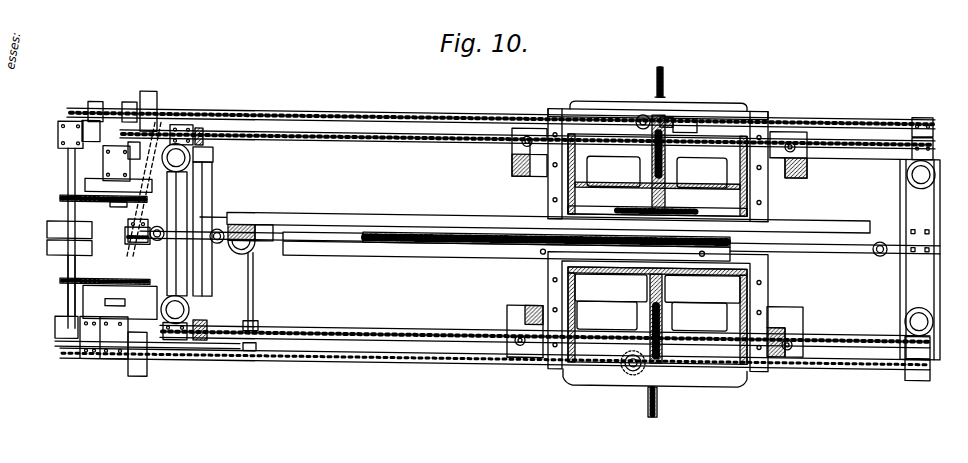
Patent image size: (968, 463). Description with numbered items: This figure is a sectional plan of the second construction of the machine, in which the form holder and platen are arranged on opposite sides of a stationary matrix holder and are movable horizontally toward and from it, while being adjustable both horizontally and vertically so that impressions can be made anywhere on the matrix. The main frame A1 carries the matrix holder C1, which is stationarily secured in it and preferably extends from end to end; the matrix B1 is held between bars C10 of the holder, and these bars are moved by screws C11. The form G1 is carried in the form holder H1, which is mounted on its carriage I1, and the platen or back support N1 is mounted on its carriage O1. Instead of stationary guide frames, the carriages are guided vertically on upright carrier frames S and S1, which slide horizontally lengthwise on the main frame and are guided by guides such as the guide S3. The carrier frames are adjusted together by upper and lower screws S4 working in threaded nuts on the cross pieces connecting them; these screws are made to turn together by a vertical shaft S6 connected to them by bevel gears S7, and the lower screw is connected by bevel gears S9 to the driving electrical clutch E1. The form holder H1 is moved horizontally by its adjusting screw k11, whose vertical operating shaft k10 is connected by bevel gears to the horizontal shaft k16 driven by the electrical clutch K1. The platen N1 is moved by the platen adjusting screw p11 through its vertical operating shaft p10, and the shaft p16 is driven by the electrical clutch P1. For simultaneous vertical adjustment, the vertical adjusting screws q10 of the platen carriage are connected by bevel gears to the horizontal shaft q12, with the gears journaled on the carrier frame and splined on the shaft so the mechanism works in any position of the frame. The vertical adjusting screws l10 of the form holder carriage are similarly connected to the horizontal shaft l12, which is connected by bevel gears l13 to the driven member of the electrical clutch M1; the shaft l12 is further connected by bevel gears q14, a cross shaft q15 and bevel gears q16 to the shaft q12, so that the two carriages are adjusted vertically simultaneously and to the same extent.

The horizontal shaft k16 is at (310, 117).
The horizontal shaft l12 is at (363, 142).
The horizontal shaft q12 is at (393, 329).
The guide S3 is at (406, 142).
The shaft p16 is at (368, 360).
The matrix holder C1 is at (310, 222).
The matrix B1 is at (441, 229).
The bars C10 is at (798, 248).
The screws C11 is at (219, 246).
The adjusting screws S4 is at (268, 243).
The vertical operating shaft k10 is at (641, 109).
The carriage I1 is at (548, 198).
The form holder H1 is at (599, 190).
The adjusting screw k11 is at (666, 170).
The form G1 is at (684, 190).
The carrier frame S is at (515, 162).
The vertical adjusting screws l10 is at (528, 131).
The platen N1 is at (598, 293).
The carrier frame S1 is at (586, 337).
The platen adjusting screw p11 is at (658, 401).
The vertical operating shaft p10 is at (630, 368).
The carriage O1 is at (541, 293).
The vertical adjusting screws q10 is at (530, 356).
The main frame A1 is at (897, 194).
The electrical clutch K1 is at (148, 100).
The bevel gears l13 is at (110, 142).
The bevel gears q14 is at (201, 139).
The cross shaft q15 is at (246, 170).
The bevel gears S7 is at (243, 210).
The electrical clutch M1 is at (95, 189).
The bevel gears S9 is at (125, 235).
The vertical shaft S6 is at (152, 242).
The electrical clutch E1 is at (92, 293).
The electrical clutch P1 is at (136, 372).
The bevel gears q16 is at (200, 343).